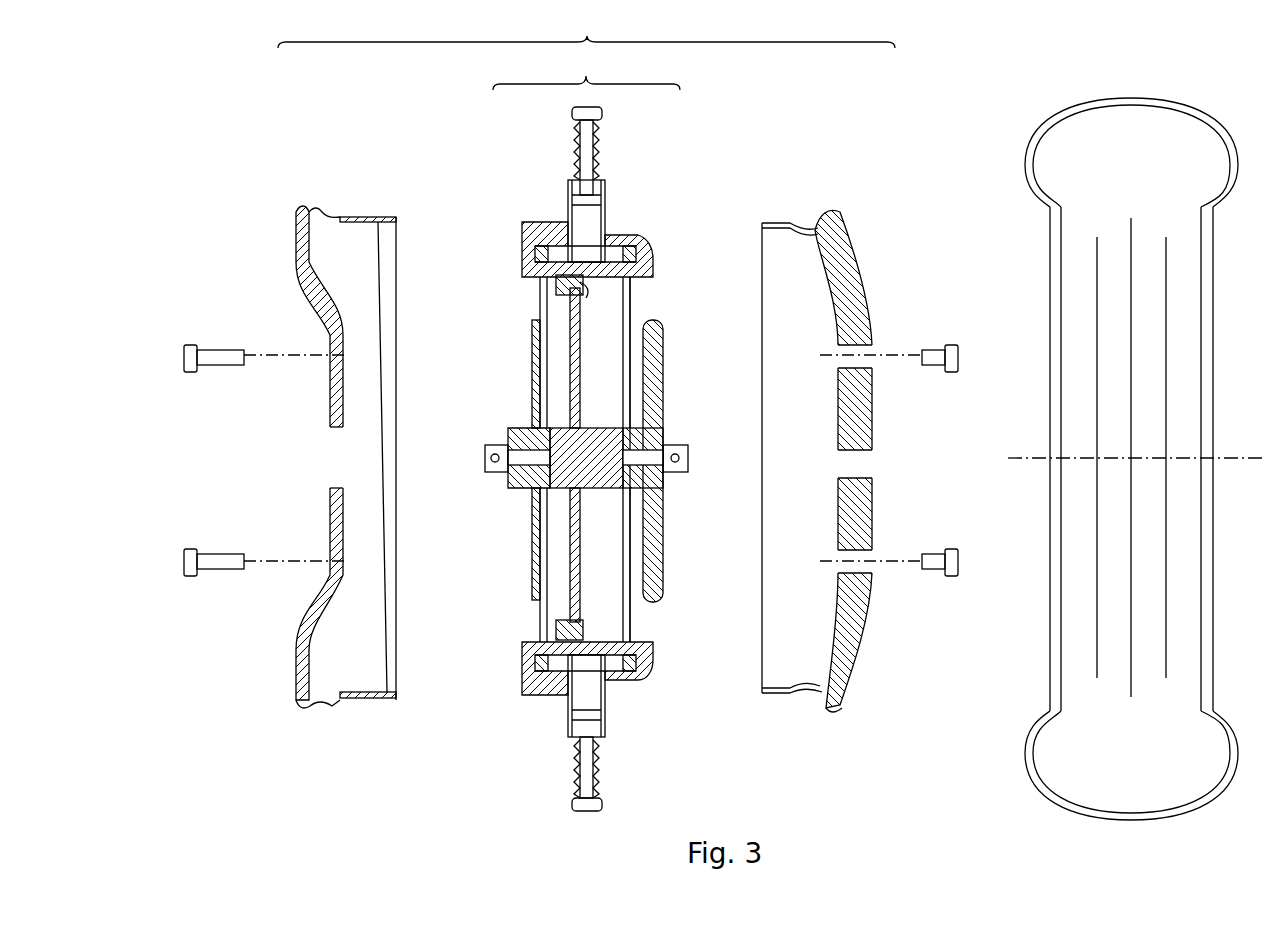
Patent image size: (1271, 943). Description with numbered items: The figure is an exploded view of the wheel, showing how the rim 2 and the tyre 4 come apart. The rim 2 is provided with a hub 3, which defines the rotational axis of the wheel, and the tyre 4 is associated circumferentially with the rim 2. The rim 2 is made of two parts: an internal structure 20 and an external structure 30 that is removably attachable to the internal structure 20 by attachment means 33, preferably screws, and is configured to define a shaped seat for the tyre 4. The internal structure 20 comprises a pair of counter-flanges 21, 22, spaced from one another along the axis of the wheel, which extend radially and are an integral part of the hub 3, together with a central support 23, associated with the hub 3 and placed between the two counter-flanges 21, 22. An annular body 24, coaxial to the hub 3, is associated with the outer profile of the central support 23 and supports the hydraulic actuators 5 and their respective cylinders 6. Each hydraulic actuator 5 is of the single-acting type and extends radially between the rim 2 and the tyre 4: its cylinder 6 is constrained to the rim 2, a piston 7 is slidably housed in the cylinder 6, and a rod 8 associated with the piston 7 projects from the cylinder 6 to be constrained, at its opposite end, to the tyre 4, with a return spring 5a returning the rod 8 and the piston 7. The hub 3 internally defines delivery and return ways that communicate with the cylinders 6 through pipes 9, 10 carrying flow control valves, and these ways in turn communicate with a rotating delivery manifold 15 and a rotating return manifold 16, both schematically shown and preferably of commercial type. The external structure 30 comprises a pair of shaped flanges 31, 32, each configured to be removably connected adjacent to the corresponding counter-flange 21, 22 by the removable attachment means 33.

The rim 2 is at (586, 30).
The internal structure 20 is at (586, 72).
The external structure 30 is at (577, 426).
The shaped flange 31 is at (306, 660).
The shaped flange 32 is at (850, 638).
The attachment means 33 is at (226, 560).
The tyre 4 is at (1184, 103).
The hub 3 is at (624, 440).
The hydraulic actuator 5 is at (584, 459).
The return spring 5a is at (575, 128).
The cylinder 6 is at (605, 236).
The piston 7 is at (572, 200).
The rod 8 is at (599, 150).
The pipe 9 is at (630, 308).
The pipe 10 is at (540, 298).
The rotating delivery manifold 15 is at (687, 452).
The rotating return manifold 16 is at (488, 466).
The counter-flange 21 is at (534, 378).
The counter-flange 22 is at (654, 528).
The central support 23 is at (582, 380).
The annular body 24 is at (530, 236).